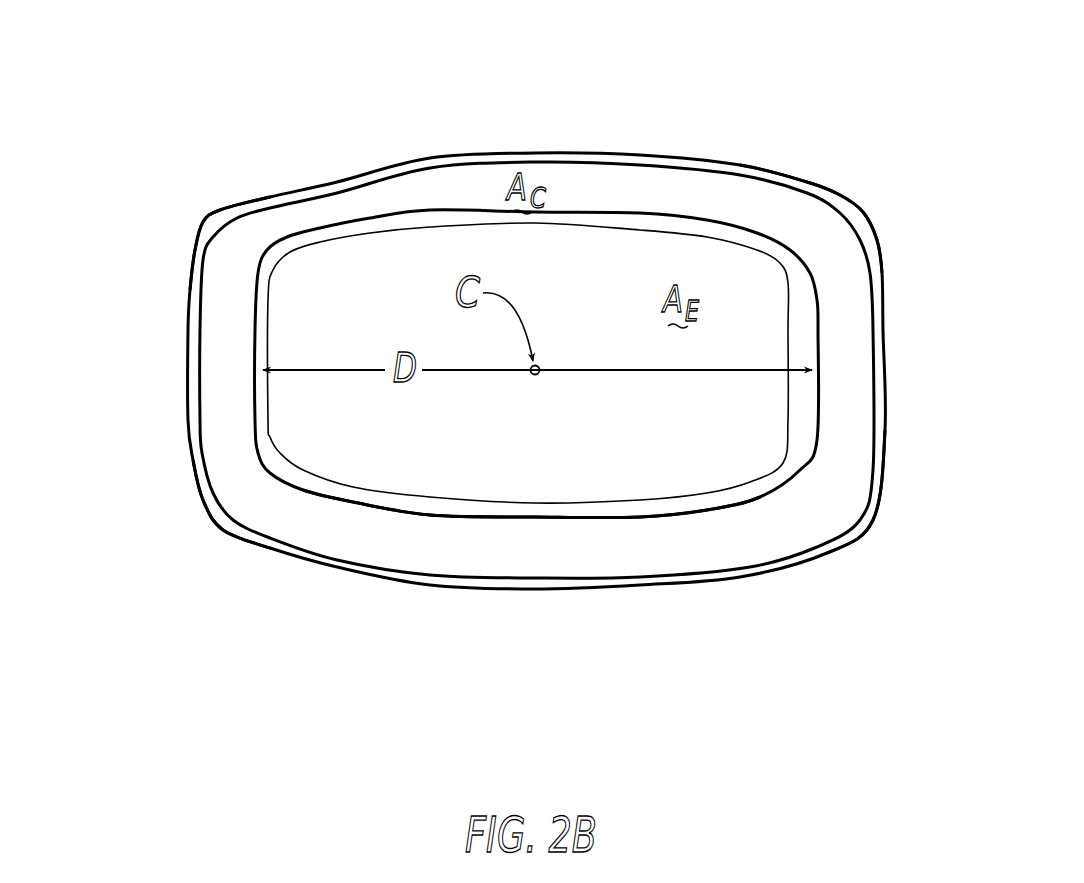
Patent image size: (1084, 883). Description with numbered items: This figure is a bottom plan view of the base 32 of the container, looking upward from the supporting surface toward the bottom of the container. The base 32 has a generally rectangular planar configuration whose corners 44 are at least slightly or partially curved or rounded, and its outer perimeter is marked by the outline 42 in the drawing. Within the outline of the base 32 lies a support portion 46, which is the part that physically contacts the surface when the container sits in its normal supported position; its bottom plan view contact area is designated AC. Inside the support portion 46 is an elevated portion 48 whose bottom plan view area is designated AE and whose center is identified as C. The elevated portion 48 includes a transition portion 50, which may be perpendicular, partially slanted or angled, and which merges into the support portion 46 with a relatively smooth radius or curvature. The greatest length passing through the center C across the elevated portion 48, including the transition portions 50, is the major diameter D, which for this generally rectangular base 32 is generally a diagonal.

The base 32 is at (565, 146).
The outer body 42 is at (192, 385).
The corners 44 is at (203, 211).
The support portion 46 is at (368, 201).
The elevated portion 48 is at (350, 500).
The transition portion 50 is at (262, 292).